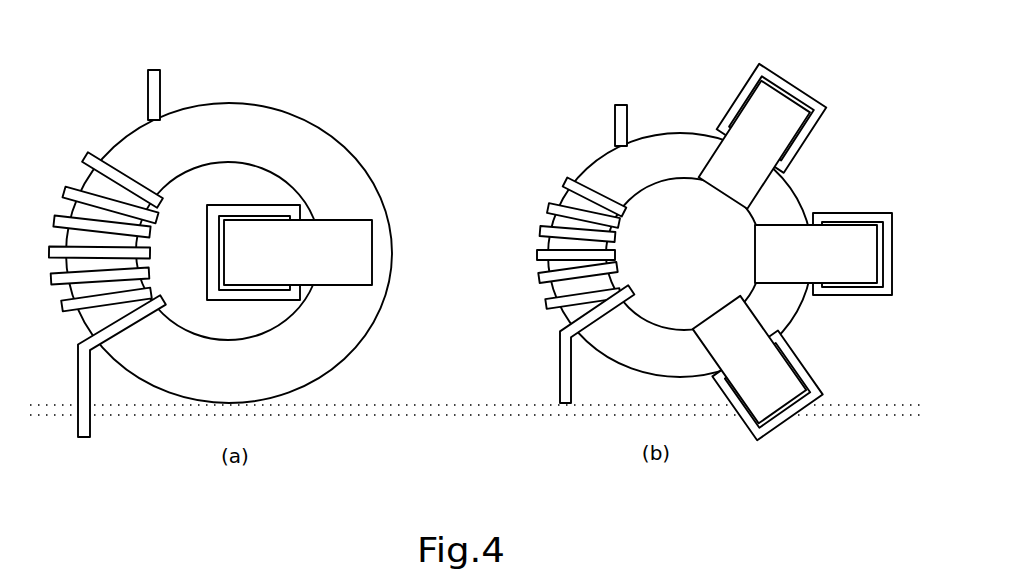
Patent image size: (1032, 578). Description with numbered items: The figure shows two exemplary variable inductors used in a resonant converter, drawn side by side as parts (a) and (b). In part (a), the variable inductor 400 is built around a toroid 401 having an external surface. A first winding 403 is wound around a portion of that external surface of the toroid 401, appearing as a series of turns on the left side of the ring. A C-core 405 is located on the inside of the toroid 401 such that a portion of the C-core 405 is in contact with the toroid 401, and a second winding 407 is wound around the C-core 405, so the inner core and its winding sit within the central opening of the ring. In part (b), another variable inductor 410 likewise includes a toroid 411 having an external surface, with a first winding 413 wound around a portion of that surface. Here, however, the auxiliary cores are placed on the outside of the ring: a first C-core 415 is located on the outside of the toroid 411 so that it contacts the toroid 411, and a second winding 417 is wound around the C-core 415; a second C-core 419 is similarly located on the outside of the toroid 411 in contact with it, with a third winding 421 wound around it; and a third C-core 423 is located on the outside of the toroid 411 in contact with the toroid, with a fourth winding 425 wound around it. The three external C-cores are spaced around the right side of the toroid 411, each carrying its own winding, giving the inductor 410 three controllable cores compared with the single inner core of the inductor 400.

The variable inductor 400 is at (226, 274).
The toroid 401 is at (303, 118).
The first winding 403 is at (147, 86).
The C-core 405 is at (337, 219).
The second winding 407 is at (267, 204).
The variable inductor 410 is at (714, 254).
The toroid 411 is at (688, 132).
The first winding 413 is at (614, 123).
The first C-core 415 is at (790, 111).
The second winding 417 is at (740, 88).
The second C-core 419 is at (847, 272).
The third winding 421 is at (843, 213).
The third C-core 423 is at (797, 397).
The fourth winding 425 is at (734, 421).